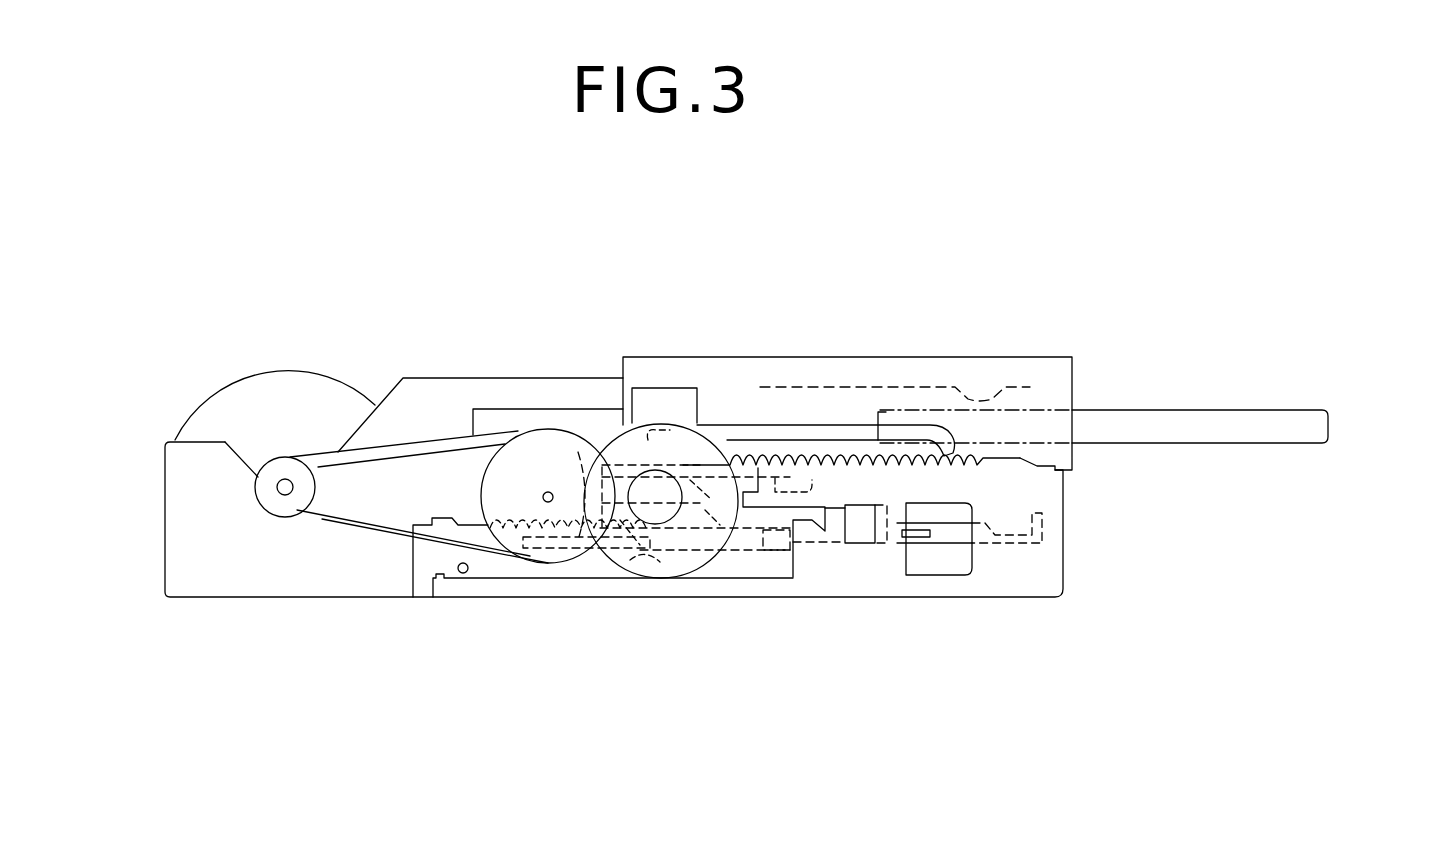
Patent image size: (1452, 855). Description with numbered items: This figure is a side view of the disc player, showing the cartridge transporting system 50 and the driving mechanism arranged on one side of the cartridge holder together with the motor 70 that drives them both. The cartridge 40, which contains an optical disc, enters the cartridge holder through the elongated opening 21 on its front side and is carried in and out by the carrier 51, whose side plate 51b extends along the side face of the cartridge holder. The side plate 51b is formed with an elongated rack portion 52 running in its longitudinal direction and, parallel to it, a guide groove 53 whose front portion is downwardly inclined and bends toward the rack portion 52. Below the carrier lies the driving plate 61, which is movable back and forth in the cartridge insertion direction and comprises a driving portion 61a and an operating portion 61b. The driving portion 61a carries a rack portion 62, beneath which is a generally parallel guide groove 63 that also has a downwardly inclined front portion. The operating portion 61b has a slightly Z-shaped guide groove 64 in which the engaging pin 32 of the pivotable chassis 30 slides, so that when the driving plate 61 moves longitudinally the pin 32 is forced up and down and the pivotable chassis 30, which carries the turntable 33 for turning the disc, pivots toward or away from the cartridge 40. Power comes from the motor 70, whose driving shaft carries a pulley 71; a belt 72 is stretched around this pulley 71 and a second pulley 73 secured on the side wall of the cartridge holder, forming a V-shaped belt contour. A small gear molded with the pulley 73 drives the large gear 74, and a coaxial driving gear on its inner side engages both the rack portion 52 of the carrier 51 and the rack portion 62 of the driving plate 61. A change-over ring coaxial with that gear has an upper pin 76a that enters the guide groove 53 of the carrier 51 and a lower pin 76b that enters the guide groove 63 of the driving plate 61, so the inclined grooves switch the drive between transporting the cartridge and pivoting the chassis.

The cartridge transporting system 50 is at (583, 343).
The motor 70 is at (274, 388).
The pulley 71 is at (262, 493).
The belt 72 is at (322, 528).
The rack portion 62 is at (572, 530).
The guide groove 63 is at (565, 548).
The pulley 73 is at (537, 560).
The large gear 74 is at (680, 562).
The guide groove 64 is at (712, 482).
The upper pin 76a is at (650, 425).
The lower pin 76b is at (652, 565).
The driving plate 61 is at (775, 562).
The driving portion 61a is at (464, 612).
The operating portion 61b is at (684, 455).
The carrier 51 is at (1053, 357).
The side plate 51b is at (1063, 378).
The guide groove 53 is at (790, 470).
The turntable 33 is at (795, 470).
The rack portion 52 is at (905, 450).
The elongated opening 21 is at (1073, 428).
The cartridge 40 is at (1318, 430).
The engaging pin 32 is at (798, 543).
The pivotable chassis 30 is at (1043, 538).